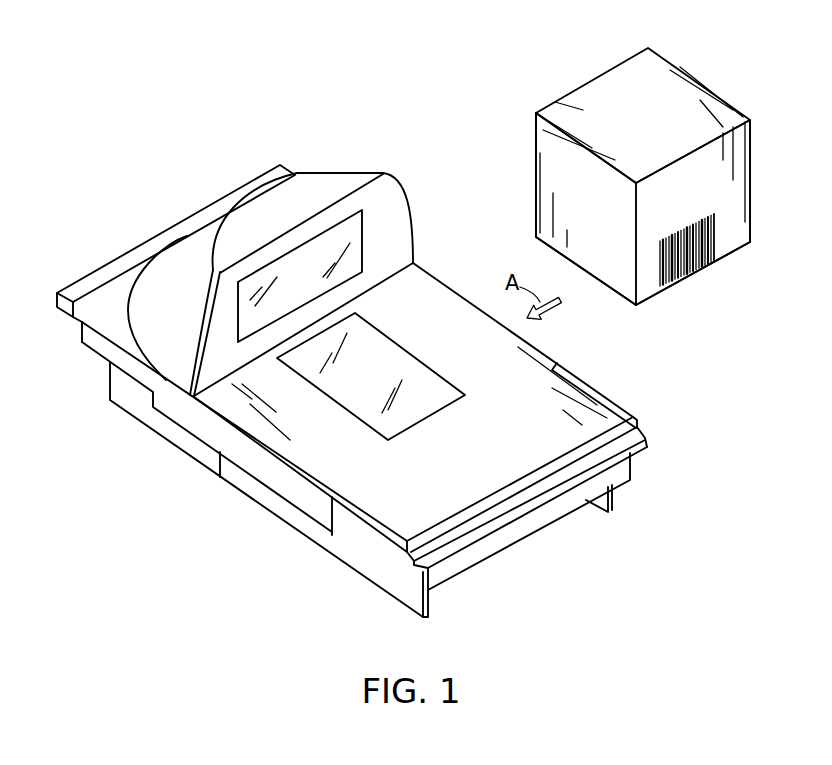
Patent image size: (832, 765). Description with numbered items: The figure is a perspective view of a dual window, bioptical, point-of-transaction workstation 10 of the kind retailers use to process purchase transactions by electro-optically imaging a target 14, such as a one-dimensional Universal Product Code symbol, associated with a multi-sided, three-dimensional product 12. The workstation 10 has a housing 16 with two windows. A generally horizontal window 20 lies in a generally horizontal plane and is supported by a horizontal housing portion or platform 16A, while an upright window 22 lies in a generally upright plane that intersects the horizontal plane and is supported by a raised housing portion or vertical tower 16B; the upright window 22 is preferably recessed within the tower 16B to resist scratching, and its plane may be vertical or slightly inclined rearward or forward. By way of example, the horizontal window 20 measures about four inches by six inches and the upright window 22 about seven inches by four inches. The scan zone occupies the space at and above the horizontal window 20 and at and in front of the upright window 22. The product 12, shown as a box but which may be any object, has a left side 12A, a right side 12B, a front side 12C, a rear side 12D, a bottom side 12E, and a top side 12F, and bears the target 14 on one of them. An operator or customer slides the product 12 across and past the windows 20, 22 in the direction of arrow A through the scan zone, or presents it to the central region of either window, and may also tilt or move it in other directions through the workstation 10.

The point-of-transaction workstation 10 is at (194, 539).
The product 12 is at (663, 187).
The left side 12A is at (628, 287).
The right side 12B is at (750, 180).
The front side 12C is at (733, 238).
The rear side 12D is at (593, 82).
The bottom side 12E is at (726, 256).
The top side 12F is at (562, 100).
The target 14 is at (682, 290).
The housing 16 is at (387, 351).
The horizontal housing portion or platform 16A is at (247, 410).
The raised housing portion or vertical tower 16B is at (400, 190).
The horizontal window 20 is at (373, 433).
The upright window 22 is at (325, 242).